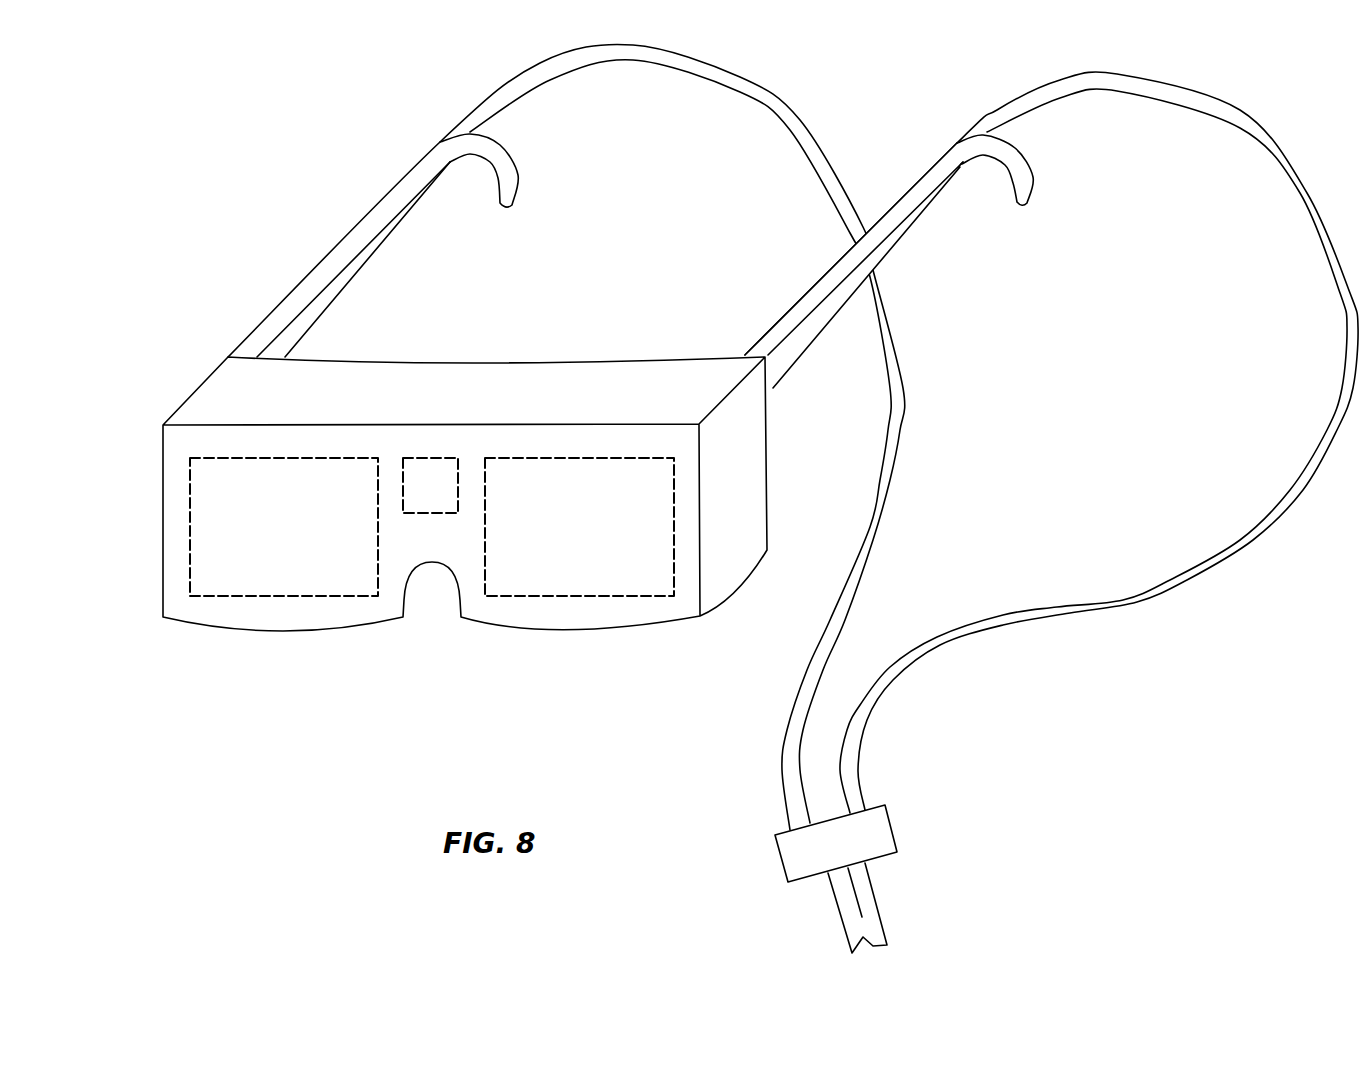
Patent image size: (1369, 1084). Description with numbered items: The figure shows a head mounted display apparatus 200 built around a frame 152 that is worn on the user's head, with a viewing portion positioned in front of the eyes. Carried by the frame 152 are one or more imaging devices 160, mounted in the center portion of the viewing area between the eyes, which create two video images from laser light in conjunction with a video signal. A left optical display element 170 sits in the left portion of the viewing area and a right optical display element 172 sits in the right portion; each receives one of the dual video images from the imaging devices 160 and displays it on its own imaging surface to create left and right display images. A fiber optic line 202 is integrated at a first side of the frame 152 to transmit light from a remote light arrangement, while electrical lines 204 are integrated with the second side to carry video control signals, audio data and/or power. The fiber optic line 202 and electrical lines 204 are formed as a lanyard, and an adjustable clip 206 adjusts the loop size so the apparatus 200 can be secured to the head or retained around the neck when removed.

The head mounted display apparatus 200 is at (331, 158).
The frame 152 is at (197, 378).
The imaging devices 160 is at (432, 493).
The left optical display element 170 is at (203, 520).
The right optical display element 172 is at (579, 580).
The fiber optic line 202 is at (703, 78).
The electrical lines 204 is at (1258, 149).
The adjustable clip 206 is at (897, 832).